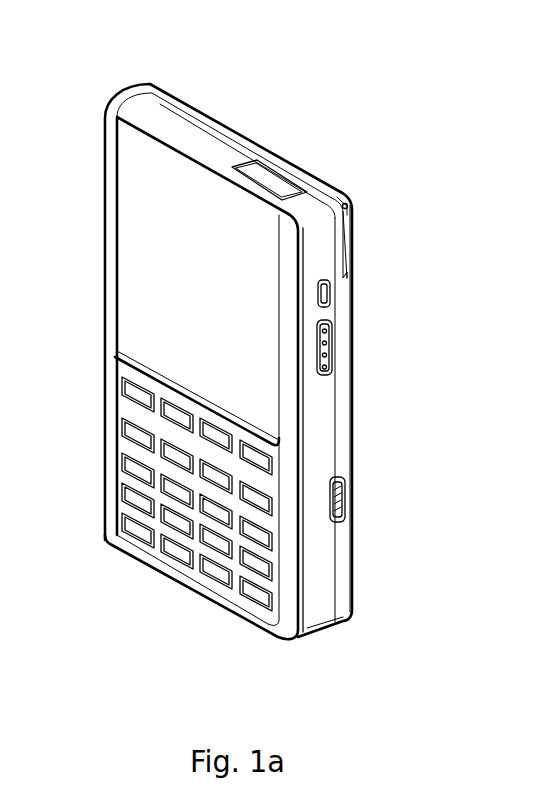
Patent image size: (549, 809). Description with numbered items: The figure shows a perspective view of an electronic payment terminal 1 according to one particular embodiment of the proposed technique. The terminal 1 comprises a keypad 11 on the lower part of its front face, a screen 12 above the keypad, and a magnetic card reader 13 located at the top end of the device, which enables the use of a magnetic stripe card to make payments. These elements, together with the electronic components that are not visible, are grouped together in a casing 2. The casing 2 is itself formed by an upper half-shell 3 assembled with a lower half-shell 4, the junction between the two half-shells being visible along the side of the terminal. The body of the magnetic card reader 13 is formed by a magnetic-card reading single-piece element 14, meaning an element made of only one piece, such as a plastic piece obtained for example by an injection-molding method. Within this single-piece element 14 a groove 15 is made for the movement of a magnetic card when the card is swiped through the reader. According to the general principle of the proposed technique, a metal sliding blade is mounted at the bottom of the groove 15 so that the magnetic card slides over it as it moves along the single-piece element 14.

The electronic payment terminal 1 is at (92, 83).
The casing 2 is at (345, 438).
The upper half-shell 3 is at (316, 617).
The lower half-shell 4 is at (340, 612).
The keypad 11 is at (127, 523).
The screen 12 is at (122, 293).
The magnetic card reader 13 is at (310, 176).
The magnetic-card reading single-piece element 14 is at (340, 263).
The groove 15 is at (347, 228).